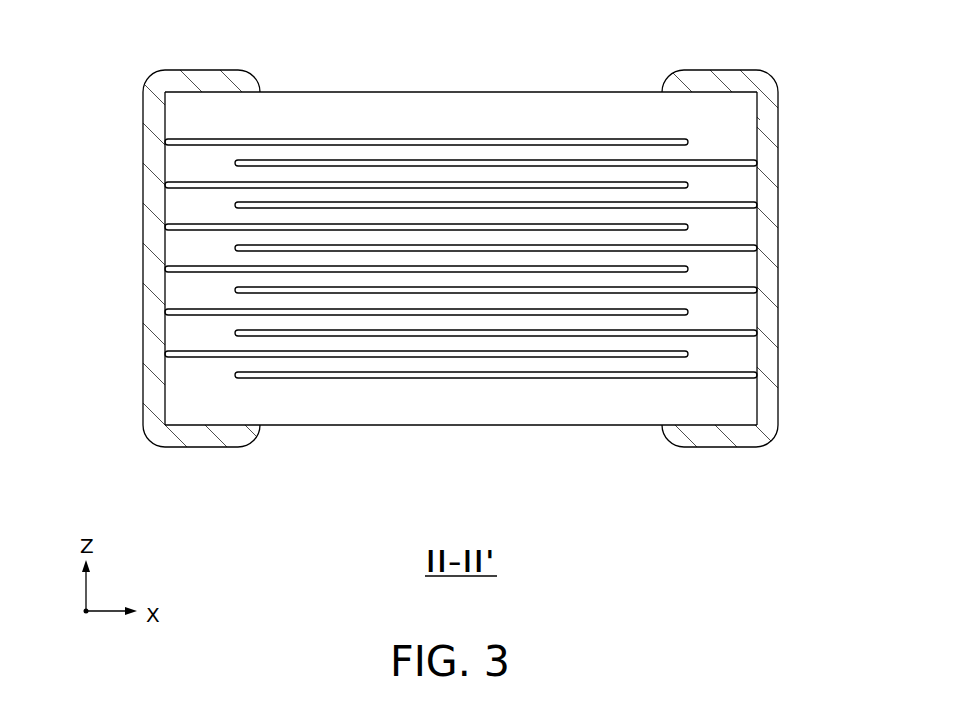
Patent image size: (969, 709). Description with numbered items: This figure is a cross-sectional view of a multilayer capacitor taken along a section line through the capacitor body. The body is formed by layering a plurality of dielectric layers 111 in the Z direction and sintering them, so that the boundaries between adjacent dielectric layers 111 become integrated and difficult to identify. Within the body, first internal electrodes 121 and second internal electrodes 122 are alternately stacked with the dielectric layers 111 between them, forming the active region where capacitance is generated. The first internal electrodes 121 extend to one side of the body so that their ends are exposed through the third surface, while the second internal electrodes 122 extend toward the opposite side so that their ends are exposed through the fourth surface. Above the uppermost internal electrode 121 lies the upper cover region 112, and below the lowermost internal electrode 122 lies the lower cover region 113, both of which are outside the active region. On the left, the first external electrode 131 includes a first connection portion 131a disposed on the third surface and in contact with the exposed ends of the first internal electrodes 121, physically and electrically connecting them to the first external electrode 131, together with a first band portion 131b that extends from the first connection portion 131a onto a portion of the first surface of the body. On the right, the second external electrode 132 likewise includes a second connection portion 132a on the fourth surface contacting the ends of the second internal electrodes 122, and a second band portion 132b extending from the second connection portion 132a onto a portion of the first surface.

The dielectric layer 111 is at (698, 198).
The upper cover region 112 is at (483, 107).
The lower cover region 113 is at (478, 412).
The first internal electrode 121 is at (687, 148).
The second internal electrode 122 is at (741, 210).
The first external electrode 131 is at (142, 273).
The first connection portion 131a is at (148, 407).
The first band portion 131b is at (185, 451).
The second external electrode 132 is at (785, 274).
The second connection portion 132a is at (778, 410).
The second band portion 132b is at (760, 462).